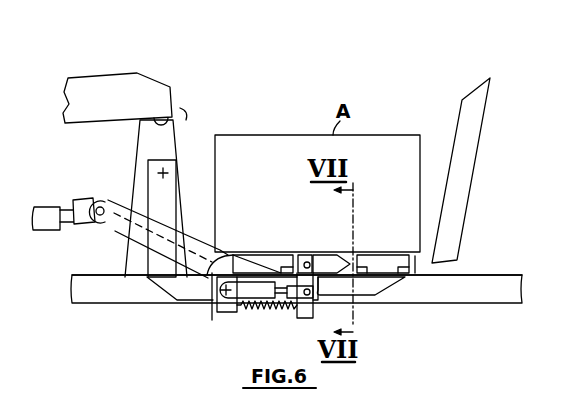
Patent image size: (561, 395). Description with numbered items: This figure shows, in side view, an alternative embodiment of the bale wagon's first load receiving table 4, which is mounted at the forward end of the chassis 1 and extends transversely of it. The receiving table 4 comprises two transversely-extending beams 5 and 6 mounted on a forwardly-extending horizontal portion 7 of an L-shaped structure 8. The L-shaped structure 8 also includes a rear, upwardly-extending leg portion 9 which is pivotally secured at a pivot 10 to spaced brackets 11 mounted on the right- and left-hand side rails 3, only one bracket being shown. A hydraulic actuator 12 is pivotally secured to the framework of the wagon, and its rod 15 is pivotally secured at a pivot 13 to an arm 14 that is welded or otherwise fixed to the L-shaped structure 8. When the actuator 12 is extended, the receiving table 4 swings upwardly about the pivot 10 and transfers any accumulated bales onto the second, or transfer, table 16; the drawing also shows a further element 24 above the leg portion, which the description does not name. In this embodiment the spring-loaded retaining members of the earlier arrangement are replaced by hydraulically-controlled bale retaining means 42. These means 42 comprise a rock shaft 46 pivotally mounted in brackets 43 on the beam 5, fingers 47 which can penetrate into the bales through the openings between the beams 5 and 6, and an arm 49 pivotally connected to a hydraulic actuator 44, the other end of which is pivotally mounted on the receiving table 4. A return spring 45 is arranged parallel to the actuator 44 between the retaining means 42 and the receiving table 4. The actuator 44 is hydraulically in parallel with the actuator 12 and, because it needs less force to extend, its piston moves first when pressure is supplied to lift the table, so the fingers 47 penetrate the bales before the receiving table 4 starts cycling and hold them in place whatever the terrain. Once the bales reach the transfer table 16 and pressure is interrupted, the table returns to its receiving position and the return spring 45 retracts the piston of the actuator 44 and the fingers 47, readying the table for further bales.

The chassis 1 is at (484, 312).
The side rails 3 is at (467, 305).
The receiving table 4 is at (330, 293).
The transversely-extending beam 5 is at (211, 315).
The transversely-extending beam 6 is at (410, 272).
The horizontal portion 7 is at (200, 300).
The L-shaped structure 8 is at (317, 311).
The leg portion 9 is at (147, 277).
The pivot 10 is at (177, 165).
The brackets 11 is at (178, 172).
The hydraulic actuator 12 is at (55, 230).
The pivot 13 is at (101, 206).
The arm 14 is at (112, 231).
The rod 15 is at (73, 224).
The transfer table 16 is at (172, 105).
The workpiece 24 is at (98, 79).
The bale retaining means 42 is at (344, 286).
The brackets 43 is at (296, 255).
The hydraulic actuator 44 is at (232, 306).
The return spring 45 is at (256, 310).
The rock shaft 46 is at (309, 262).
The fingers 47 is at (356, 254).
The arm 49 is at (300, 308).